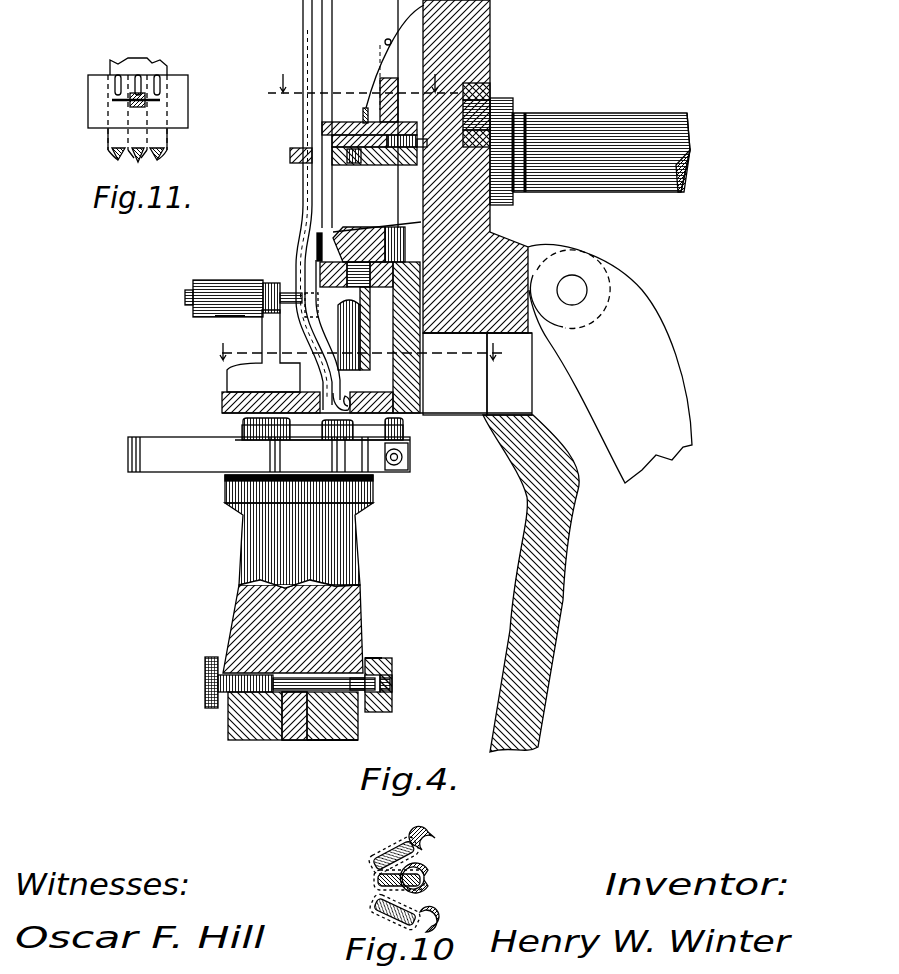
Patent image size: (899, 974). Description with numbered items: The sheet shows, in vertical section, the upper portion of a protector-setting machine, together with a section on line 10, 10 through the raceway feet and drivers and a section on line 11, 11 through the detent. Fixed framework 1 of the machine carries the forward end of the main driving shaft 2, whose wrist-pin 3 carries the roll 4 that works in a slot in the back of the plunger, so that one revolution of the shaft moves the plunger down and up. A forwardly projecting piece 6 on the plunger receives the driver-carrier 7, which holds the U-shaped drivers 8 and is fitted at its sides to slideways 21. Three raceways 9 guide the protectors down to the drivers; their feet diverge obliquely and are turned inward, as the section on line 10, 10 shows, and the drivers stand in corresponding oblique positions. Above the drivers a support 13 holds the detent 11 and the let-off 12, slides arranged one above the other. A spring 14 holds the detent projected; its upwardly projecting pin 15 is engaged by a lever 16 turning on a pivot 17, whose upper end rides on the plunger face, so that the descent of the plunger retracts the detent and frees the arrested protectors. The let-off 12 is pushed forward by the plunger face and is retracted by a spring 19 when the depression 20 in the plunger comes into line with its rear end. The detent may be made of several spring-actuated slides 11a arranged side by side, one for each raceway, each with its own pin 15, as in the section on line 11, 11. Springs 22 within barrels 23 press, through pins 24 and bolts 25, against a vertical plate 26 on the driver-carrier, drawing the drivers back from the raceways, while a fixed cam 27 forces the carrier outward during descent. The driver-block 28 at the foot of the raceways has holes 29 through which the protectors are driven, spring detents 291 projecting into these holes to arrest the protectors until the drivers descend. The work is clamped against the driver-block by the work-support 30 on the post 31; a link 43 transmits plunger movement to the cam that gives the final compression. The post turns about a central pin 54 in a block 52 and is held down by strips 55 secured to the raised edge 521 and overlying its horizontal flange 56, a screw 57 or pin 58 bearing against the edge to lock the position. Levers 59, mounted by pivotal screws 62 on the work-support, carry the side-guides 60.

In FIG. 4, the fixed framework 1 is at (568, 630).
In FIG. 4, the main or driving shaft 2 is at (669, 201).
In FIG. 4, the wrist-pin 3 is at (500, 102).
In FIG. 4, the roll 4 is at (492, 92).
In FIG. 4, the forwardly projecting piece 6 is at (364, 240).
In FIG. 4, the driver-carrier 7 is at (325, 280).
In FIG. 4, the drivers 8 is at (340, 395).
In FIG. 10, the drivers 8 is at (444, 846).
In FIG. 11, the raceways 9 is at (116, 160).
In FIG. 4, the raceways 9 is at (298, 34).
In FIG. 10, the raceways 9 is at (373, 857).
In FIG. 4, the protector 10 is at (364, 350).
In FIG. 4, the detent 11 is at (360, 114).
In FIG. 11, the spring-actuated slides 11a is at (216, 120).
In FIG. 4, the let-off 12 is at (330, 140).
In FIG. 4, the support 13 is at (292, 161).
In FIG. 4, the spring 14 is at (404, 99).
In FIG. 11, the pin 15 is at (138, 80).
In FIG. 4, the pin 15 is at (364, 108).
In FIG. 11, the lever 16 is at (145, 98).
In FIG. 4, the pivot 17 is at (387, 39).
In FIG. 4, the spring 19 is at (357, 165).
In FIG. 4, the depression 20 is at (492, 218).
In FIG. 4, the slideways 21 is at (338, 278).
In FIG. 4, the springs 22 is at (225, 316).
In FIG. 4, the barrels 23 is at (200, 277).
In FIG. 4, the pin 24 is at (262, 290).
In FIG. 4, the bolt 25 is at (189, 304).
In FIG. 4, the vertical plate 26 is at (306, 231).
In FIG. 4, the fixed cam 27 is at (440, 338).
In FIG. 4, the driver-block 28 is at (218, 408).
In FIG. 4, the holes 29 is at (350, 402).
In FIG. 4, the spring detents 291 is at (490, 400).
In FIG. 4, the work-support 30 is at (174, 484).
In FIG. 4, the post or standard 31 is at (232, 591).
In FIG. 4, the link 43 is at (693, 374).
In FIG. 4, the block 52 is at (229, 742).
In FIG. 4, the central pin 54 is at (296, 751).
In FIG. 4, the strip 55 is at (376, 675).
In FIG. 4, the horizontal flange 56 is at (393, 700).
In FIG. 4, the screw 57 is at (201, 693).
In FIG. 4, the pin 58 is at (368, 658).
In FIG. 4, the levers 59 is at (372, 475).
In FIG. 4, the side-guides 60 is at (238, 435).
In FIG. 4, the pivotal screws 62 is at (404, 472).
In FIG. 4, the raised edge 521 is at (393, 683).